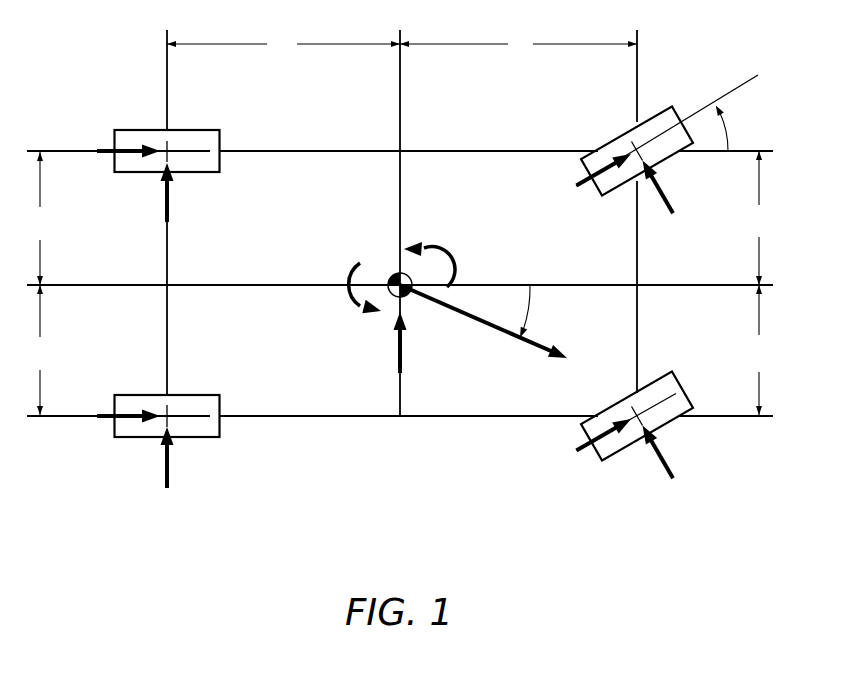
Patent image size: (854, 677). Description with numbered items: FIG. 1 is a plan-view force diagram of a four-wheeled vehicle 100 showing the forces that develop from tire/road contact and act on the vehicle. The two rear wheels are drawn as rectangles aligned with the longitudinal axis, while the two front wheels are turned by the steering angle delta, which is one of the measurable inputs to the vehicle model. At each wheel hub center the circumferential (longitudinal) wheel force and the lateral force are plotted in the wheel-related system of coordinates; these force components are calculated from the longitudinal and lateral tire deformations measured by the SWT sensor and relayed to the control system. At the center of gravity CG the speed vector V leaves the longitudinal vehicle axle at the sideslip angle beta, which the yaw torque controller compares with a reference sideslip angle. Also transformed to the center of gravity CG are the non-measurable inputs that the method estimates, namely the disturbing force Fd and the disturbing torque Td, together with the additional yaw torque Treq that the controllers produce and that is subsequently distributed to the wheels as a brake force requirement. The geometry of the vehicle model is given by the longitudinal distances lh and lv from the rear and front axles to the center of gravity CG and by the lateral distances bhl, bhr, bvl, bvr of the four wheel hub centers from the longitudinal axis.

The vehicle 100 is at (447, 410).
The center of gravity CG is at (388, 263).
The disturbing force Fd is at (402, 355).
The speed vector V is at (487, 338).
The additional yaw torque Treq is at (448, 278).
The disturbing torque Td is at (347, 302).
The steering angle delta is at (734, 127).
The sideslip angle beta is at (537, 311).
The distance of the rear axle from the center of gravity lh is at (283, 46).
The distance of the front axle from the center of gravity lv is at (518, 46).
The lateral distance of the rear left wheel bhl is at (43, 218).
The lateral distance of the rear right wheel bhr is at (43, 350).
The lateral distance of the front left wheel bvl is at (763, 218).
The lateral distance of the front right wheel bvr is at (761, 350).